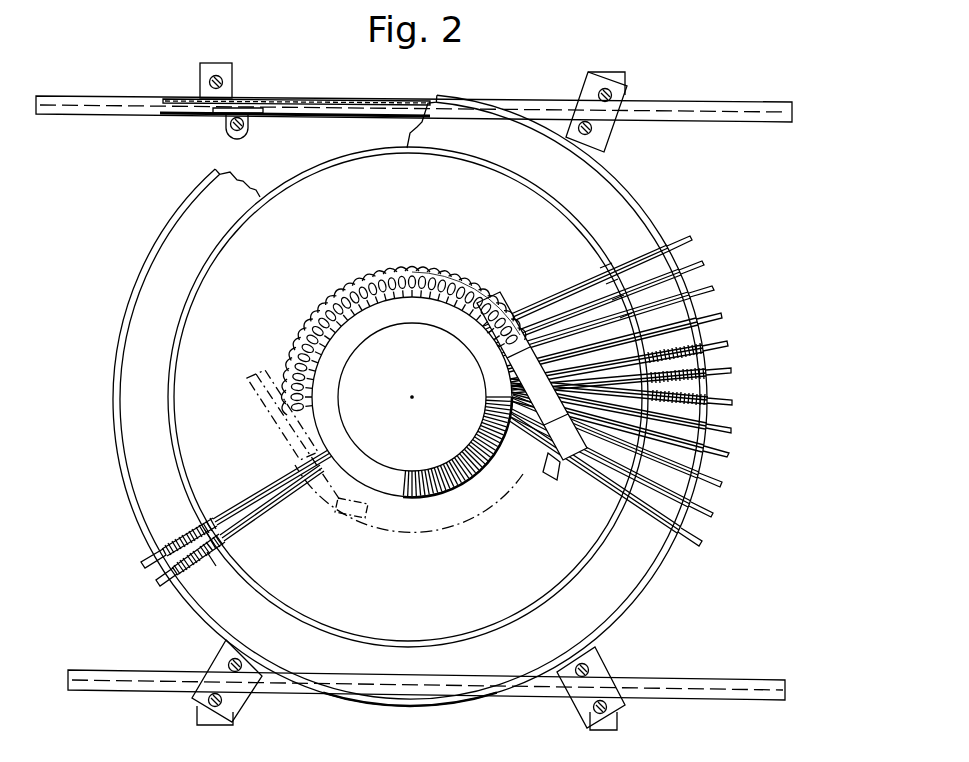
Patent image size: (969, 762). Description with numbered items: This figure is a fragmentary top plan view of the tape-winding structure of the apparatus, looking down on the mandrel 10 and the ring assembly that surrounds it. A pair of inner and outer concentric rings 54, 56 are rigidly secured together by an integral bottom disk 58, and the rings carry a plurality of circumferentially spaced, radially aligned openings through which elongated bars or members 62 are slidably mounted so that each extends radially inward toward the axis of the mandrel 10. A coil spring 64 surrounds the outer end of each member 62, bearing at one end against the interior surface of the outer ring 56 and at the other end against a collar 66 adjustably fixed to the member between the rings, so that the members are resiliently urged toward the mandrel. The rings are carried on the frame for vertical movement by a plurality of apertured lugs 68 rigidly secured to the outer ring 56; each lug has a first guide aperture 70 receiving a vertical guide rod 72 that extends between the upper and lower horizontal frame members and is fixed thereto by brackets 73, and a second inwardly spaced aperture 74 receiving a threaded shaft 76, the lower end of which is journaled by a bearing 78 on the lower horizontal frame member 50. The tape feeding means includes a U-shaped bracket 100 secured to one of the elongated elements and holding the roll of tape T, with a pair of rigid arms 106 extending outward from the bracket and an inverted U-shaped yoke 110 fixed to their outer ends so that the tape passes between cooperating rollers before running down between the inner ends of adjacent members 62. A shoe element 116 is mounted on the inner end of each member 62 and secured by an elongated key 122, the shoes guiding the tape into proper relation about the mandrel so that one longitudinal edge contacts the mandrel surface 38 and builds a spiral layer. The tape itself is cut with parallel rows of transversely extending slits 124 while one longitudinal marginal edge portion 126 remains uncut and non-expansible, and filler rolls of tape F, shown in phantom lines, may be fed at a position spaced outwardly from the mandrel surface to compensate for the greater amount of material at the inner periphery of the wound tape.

The mandrel 10 is at (380, 296).
The surface of the mandrel 38 is at (450, 326).
The lower horizontal frame member 50 is at (101, 96).
The inner ring 54 is at (435, 642).
The outer ring 56 is at (421, 706).
The bottom disk 58 is at (418, 127).
The elongated members 62 is at (593, 312).
The coil spring 64 is at (702, 360).
The collar 66 is at (606, 265).
The apertured lugs 68 is at (612, 125).
The first guide aperture 70 is at (598, 97).
The vertical guide rod 72 is at (220, 75).
The brackets 73 is at (232, 80).
The second inwardly-spaced aperture 74 is at (600, 157).
The threaded shaft 76 is at (228, 130).
The bearing 78 is at (245, 137).
The U-shaped bracket 100 is at (540, 462).
The rigid arms 106 is at (512, 412).
The inverted U-shaped yoke 110 is at (512, 383).
The shoe element 116 is at (492, 303).
The elongated key 122 is at (284, 410).
The slits 124 is at (323, 300).
The longitudinal marginal edge portion 126 is at (347, 318).
The roll of tape T is at (427, 263).
The filler rolls of tape F is at (340, 520).